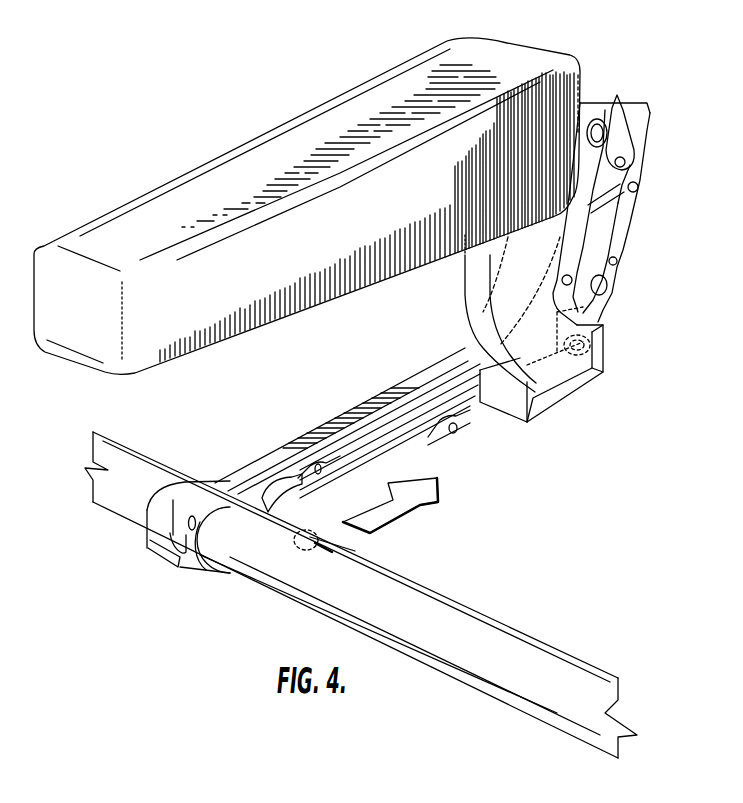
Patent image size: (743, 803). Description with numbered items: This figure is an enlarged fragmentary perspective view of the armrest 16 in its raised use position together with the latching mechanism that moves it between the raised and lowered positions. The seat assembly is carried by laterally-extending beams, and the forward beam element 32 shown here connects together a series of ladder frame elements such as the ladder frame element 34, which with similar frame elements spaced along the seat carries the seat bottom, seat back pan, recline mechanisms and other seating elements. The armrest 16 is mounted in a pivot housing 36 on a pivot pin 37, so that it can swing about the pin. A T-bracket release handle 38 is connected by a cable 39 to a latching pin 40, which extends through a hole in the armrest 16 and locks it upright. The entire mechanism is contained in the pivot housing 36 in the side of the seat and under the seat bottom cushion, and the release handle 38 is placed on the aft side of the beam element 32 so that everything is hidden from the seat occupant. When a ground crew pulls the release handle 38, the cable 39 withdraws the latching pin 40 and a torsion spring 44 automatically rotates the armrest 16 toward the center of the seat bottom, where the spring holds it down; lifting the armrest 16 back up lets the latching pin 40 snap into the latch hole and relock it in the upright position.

The armrest 16 is at (267, 163).
The forward beam element 32 is at (491, 643).
The ladder frame element 34 is at (336, 432).
The pivot housing 36 is at (578, 393).
The pivot pin 37 is at (583, 390).
The T-bracket release handle 38 is at (347, 544).
The cable 39 is at (400, 453).
The latching pin 40 is at (540, 393).
The torsion spring 44 is at (600, 328).